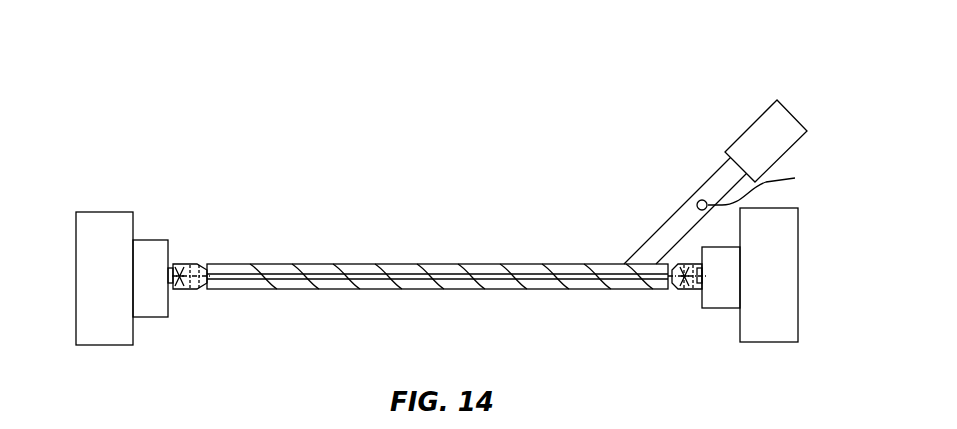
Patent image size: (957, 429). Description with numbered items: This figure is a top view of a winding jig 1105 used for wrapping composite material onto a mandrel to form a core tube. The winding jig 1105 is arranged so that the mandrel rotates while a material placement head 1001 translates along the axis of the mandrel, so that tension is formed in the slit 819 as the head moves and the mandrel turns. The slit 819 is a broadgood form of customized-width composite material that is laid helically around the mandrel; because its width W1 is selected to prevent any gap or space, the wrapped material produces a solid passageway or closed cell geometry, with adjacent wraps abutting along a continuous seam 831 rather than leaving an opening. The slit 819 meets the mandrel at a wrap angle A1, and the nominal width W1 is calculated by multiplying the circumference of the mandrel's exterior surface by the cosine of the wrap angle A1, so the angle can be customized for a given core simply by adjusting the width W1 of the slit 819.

The winding jig 1105 is at (221, 121).
The seam 831 is at (397, 264).
The slit 819 is at (650, 238).
The material placement head 1001 is at (745, 127).
The width W1 is at (697, 225).
The wrap angle A1 is at (684, 239).